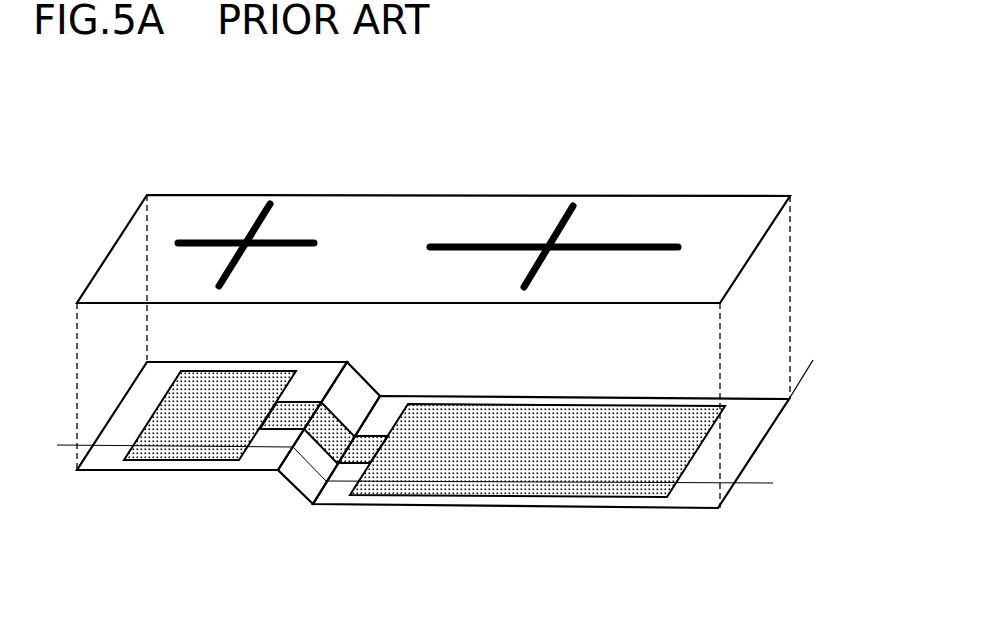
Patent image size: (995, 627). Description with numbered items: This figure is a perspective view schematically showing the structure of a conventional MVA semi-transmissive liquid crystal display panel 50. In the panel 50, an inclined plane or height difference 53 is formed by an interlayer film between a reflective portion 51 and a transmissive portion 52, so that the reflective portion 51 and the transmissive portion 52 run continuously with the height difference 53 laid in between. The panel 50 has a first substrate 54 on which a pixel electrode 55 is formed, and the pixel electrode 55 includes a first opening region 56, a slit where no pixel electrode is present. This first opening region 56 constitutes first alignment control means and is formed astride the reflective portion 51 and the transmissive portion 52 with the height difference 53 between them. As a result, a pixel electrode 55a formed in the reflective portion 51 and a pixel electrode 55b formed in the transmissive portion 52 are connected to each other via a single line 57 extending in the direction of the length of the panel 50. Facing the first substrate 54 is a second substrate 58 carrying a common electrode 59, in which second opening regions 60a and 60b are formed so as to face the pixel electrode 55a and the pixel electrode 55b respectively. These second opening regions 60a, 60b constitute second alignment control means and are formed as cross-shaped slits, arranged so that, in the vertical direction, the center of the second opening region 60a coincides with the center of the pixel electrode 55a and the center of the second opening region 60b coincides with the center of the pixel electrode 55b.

The MVA semi-transmissive liquid crystal display panel 50 is at (67, 116).
The reflective portion 51 is at (364, 333).
The transmissive portion 52 is at (811, 362).
The height difference 53 is at (347, 362).
The first substrate 54 is at (784, 437).
The pixel electrode 55 is at (256, 494).
The pixel electrode in reflective portion 55a is at (197, 456).
The pixel electrode in transmissive portion 55b is at (324, 483).
The first opening region 56 is at (360, 467).
The single line 57 is at (384, 438).
The second substrate 58 is at (793, 196).
The common electrode 59 is at (407, 218).
The second opening region 60a is at (271, 204).
The second opening region 60b is at (580, 208).